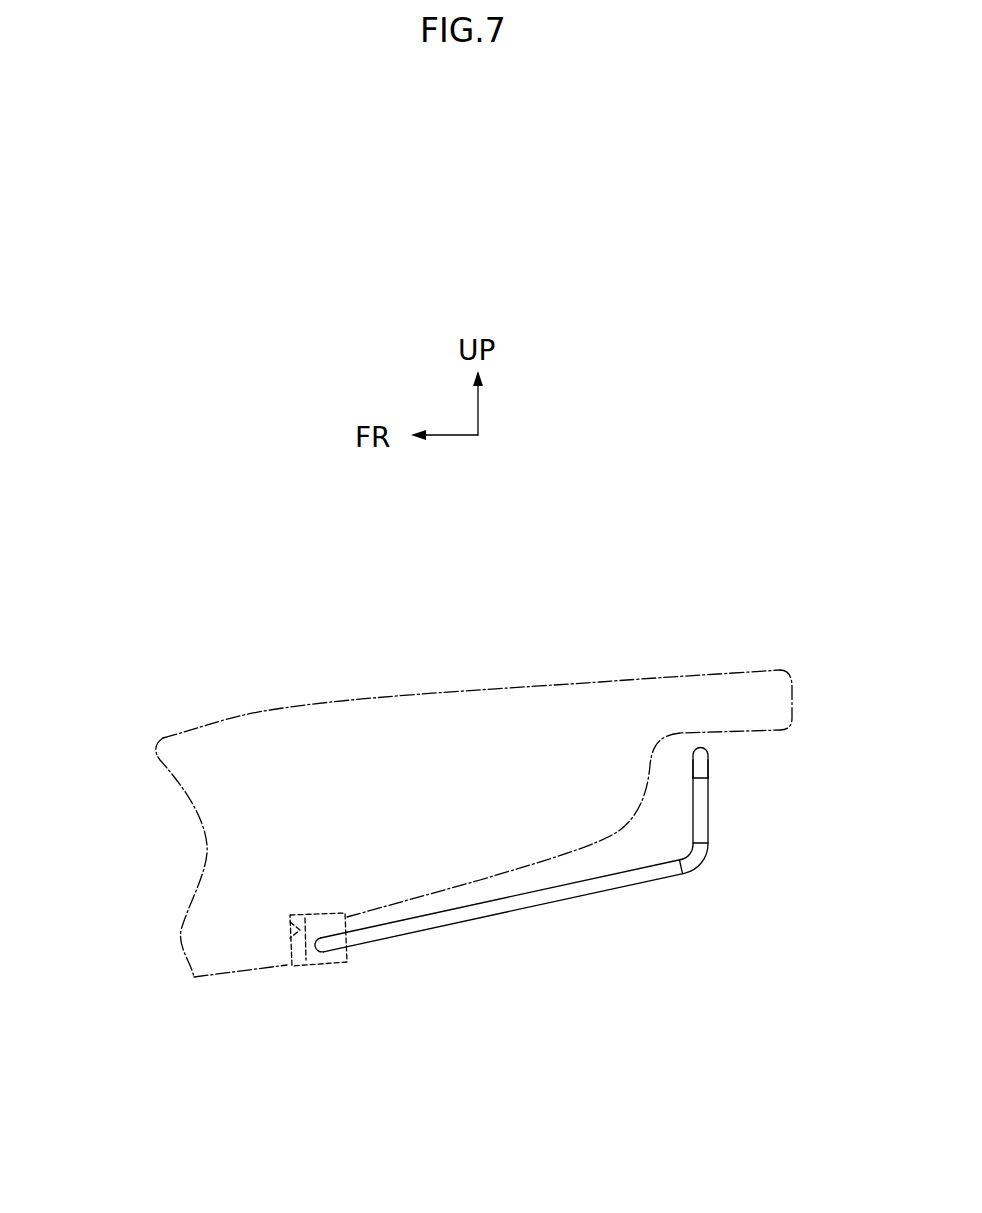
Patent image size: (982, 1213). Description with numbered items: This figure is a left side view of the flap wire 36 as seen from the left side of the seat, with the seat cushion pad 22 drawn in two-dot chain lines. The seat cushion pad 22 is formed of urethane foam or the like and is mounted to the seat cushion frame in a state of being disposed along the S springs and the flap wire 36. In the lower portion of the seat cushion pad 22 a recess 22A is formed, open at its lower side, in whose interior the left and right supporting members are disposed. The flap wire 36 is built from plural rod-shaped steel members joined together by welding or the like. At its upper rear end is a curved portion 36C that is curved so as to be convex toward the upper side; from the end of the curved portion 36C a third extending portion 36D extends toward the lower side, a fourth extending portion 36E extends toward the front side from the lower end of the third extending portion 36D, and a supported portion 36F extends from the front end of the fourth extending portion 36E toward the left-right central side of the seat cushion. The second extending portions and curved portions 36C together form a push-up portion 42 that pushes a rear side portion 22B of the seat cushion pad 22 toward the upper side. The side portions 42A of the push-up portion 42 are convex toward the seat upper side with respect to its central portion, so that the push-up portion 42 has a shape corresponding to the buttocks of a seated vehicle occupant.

The seat cushion pad 22 is at (230, 705).
The recess 22A is at (289, 940).
The rear side portion 22B is at (697, 675).
The flap wire 36 is at (487, 664).
The curved portion 36C is at (705, 745).
The third extending portion 36D is at (711, 810).
The fourth extending portion 36E is at (548, 907).
The supported portion 36F is at (320, 950).
The push-up portion 42 is at (733, 695).
The side portion 42A is at (711, 757).